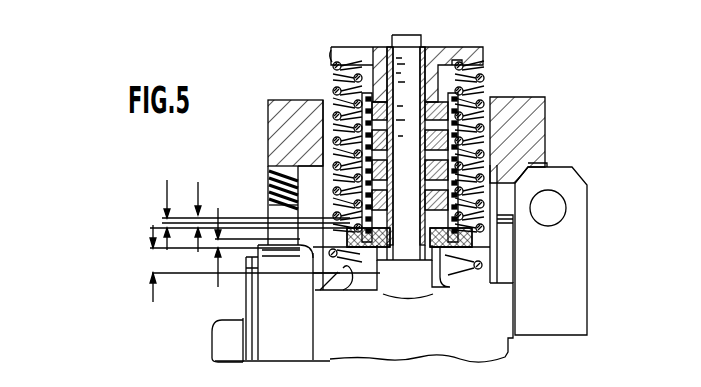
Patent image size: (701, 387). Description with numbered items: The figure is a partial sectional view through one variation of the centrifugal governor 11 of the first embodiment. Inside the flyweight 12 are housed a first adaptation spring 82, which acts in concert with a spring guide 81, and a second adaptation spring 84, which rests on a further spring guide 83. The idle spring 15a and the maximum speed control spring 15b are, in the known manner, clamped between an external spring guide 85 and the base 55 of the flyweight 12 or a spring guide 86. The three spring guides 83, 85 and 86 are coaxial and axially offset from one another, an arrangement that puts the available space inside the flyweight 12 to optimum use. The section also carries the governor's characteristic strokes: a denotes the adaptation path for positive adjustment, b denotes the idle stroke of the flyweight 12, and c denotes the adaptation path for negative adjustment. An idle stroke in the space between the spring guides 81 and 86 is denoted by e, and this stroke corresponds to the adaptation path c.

The centrifugal governor 11 is at (603, 233).
The flyweight 12 is at (275, 116).
The idle spring 15a is at (460, 107).
The maximum speed control spring 15b is at (458, 150).
The base of flyweight 55 is at (356, 273).
The spring guide 81 is at (345, 232).
The first adaptation spring 82 is at (460, 92).
The spring guide 83 is at (445, 233).
The second adaptation spring 84 is at (460, 183).
The external spring guide 85 is at (460, 50).
The spring guide 86 is at (340, 102).
The adaptation path for positive adjustment a is at (168, 222).
The idle stroke of flyweight b is at (154, 263).
The adaptation path for negative adjustment c is at (213, 250).
The idle stroke between spring guides e is at (200, 217).